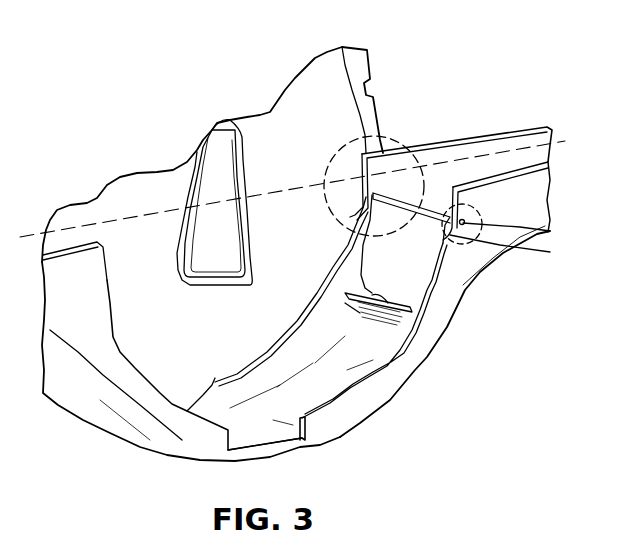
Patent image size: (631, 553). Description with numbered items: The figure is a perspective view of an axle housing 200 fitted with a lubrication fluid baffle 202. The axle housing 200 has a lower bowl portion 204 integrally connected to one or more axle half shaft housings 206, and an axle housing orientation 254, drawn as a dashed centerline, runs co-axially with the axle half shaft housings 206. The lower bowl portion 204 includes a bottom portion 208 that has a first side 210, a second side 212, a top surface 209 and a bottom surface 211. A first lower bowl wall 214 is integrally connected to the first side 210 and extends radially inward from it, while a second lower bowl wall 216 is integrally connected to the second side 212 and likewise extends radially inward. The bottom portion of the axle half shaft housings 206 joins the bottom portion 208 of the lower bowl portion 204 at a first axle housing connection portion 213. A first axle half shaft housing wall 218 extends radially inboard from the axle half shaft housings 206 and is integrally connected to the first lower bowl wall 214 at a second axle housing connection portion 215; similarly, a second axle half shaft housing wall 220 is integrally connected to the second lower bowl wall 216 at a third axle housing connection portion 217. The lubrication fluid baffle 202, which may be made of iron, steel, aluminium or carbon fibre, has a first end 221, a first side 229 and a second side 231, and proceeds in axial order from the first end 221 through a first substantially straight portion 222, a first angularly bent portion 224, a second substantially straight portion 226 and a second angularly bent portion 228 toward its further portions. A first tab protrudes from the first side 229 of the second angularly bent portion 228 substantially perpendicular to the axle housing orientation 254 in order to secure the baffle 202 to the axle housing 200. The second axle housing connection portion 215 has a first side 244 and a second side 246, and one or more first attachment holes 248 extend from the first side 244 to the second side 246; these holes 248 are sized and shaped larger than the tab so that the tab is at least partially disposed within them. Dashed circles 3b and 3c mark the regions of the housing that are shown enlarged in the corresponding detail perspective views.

The axle housing 200 is at (378, 74).
The lubrication fluid baffle 202 is at (389, 262).
The lower bowl portion 204 is at (278, 433).
The axle half shaft housings 206 is at (522, 153).
The bottom portion 208 is at (299, 390).
The top surface 209 is at (282, 400).
The first side 210 is at (378, 363).
The bottom surface 211 is at (362, 421).
The second side 212 is at (317, 360).
The first axle housing connection portion 213 is at (478, 292).
The first lower bowl wall 214 is at (375, 393).
The second axle housing connection portion 215 is at (467, 260).
The second lower bowl wall 216 is at (225, 396).
The third axle housing connection portion 217 is at (362, 158).
The first axle half shaft housing wall 218 is at (538, 187).
The second axle half shaft housing wall 220 is at (450, 147).
The first end 221 is at (408, 330).
The first substantially straight portion 222 is at (380, 304).
The first angularly bent portion 224 is at (367, 292).
The second substantially straight portion 226 is at (347, 220).
The second angularly bent portion 228 is at (410, 207).
The first side 229 is at (549, 252).
The second side 231 is at (369, 212).
The first side 244 is at (549, 158).
The second side 246 is at (442, 188).
The first attachment holes 248 is at (550, 229).
The axle housing orientation 254 is at (567, 140).
The FIG. 3b detail region 3b is at (395, 143).
The FIG. 3c detail region 3c is at (477, 235).